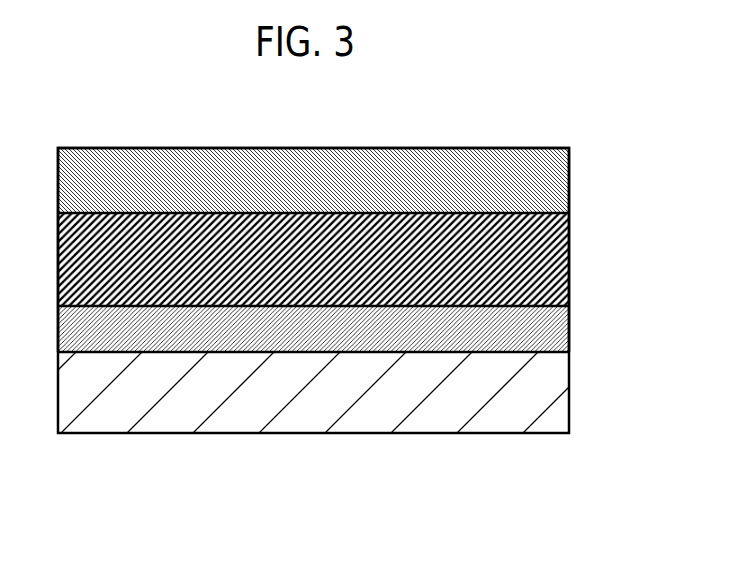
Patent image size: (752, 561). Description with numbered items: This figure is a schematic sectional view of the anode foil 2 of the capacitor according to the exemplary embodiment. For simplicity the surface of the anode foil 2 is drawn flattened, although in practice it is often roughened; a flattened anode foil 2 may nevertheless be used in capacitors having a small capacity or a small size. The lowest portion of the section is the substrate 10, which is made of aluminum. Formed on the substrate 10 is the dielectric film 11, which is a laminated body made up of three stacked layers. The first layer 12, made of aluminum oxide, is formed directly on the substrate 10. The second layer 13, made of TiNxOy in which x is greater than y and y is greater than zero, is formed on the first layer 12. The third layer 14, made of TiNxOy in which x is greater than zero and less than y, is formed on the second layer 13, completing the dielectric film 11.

The anode foil 2 is at (155, 442).
The substrate 10 is at (558, 408).
The dielectric film 11 is at (653, 147).
The first layer 12 is at (560, 333).
The second layer 13 is at (555, 265).
The third layer 14 is at (553, 190).